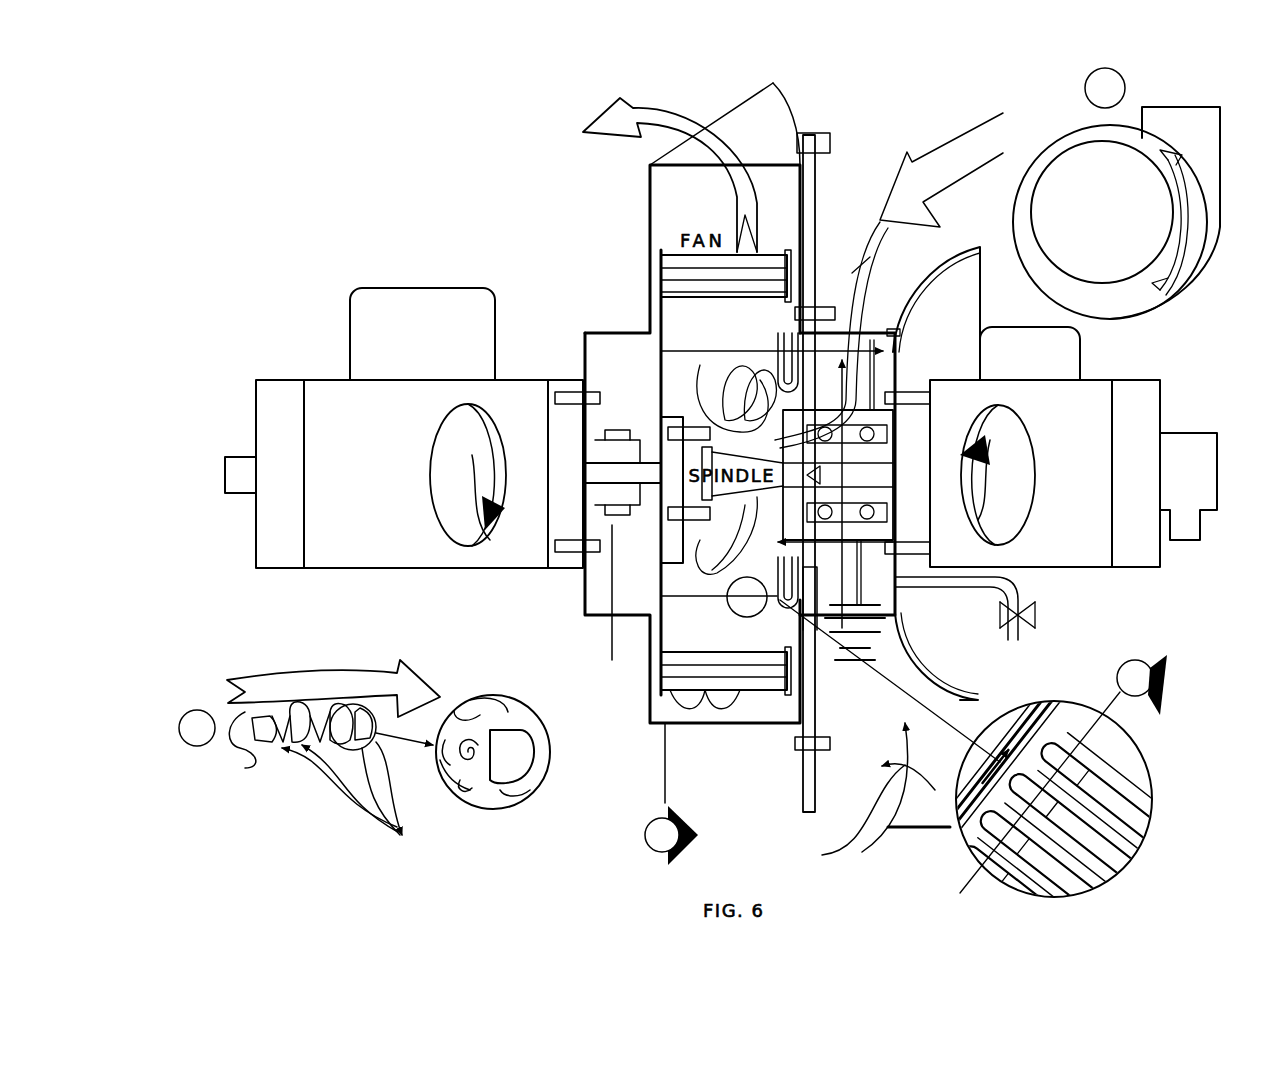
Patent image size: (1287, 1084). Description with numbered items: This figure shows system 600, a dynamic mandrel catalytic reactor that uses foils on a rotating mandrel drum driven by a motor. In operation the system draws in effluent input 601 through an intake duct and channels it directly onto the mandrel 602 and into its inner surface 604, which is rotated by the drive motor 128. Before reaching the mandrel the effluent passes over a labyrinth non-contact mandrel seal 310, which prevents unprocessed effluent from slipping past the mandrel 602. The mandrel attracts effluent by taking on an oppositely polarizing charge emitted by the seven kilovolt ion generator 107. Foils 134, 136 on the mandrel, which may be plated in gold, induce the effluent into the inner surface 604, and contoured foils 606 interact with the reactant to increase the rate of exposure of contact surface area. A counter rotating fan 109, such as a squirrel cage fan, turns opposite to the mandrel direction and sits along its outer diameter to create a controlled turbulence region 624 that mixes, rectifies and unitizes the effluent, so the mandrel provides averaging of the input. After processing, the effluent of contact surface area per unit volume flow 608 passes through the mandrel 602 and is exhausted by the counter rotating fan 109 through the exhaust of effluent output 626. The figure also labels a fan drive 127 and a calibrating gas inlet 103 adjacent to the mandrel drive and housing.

The system 600 is at (343, 247).
The fan drive motor 127 is at (408, 370).
The drive motor 128 is at (1185, 340).
The labyrinth non-contact mandrel seal 310 is at (776, 330).
The exhaust of effluent output 626 is at (607, 167).
The effluent input 601 is at (863, 396).
The ion generator 107 is at (775, 514).
The controlled turbulence region 624 is at (682, 337).
The contoured foils 606 is at (493, 752).
The per unit volume flow 608 is at (680, 362).
The inner surface 604 is at (672, 565).
The mandrel 602 is at (657, 633).
The foil 134 is at (1105, 780).
The foil 136 is at (1153, 797).
The calibrating gas inlet 103 is at (1057, 633).
The counter rotating fan 109 is at (1103, 252).